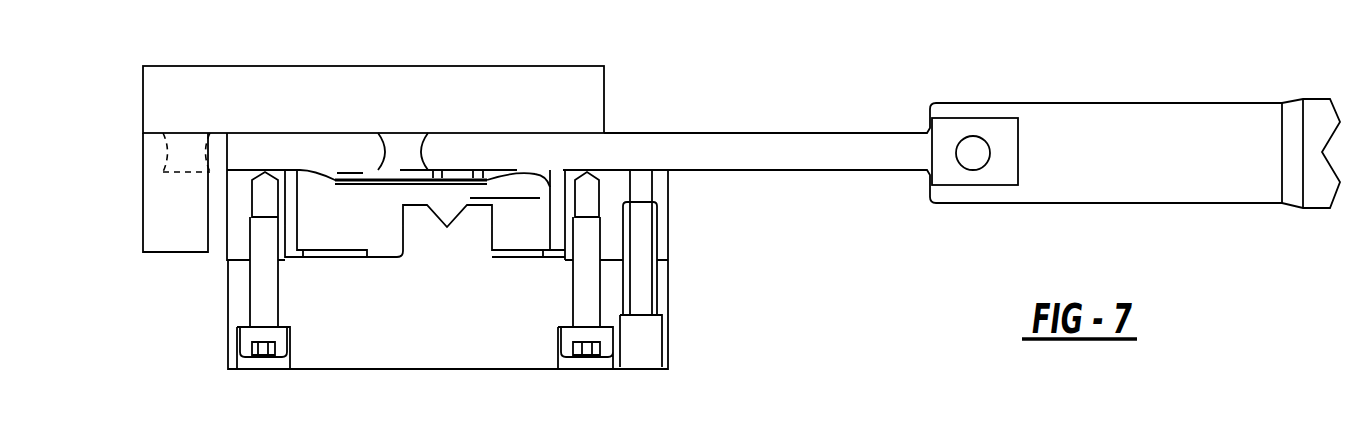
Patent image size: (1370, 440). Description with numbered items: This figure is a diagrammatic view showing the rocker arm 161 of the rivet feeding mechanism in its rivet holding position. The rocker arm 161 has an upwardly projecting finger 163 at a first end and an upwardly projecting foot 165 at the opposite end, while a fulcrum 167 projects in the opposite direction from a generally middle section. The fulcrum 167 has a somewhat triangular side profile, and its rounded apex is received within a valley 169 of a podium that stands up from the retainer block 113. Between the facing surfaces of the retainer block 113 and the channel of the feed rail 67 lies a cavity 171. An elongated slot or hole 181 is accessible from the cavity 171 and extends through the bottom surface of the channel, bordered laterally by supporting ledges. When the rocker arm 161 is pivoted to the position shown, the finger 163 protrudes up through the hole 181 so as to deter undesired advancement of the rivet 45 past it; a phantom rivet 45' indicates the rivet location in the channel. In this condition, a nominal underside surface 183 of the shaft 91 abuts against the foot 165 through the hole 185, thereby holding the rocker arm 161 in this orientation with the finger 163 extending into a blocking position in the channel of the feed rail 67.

The feed rail 67 is at (263, 147).
The pin (phantom position) 45' is at (180, 222).
The rocker arm 161 is at (377, 190).
The finger 163 is at (311, 177).
The elongated slot or hole 181 is at (330, 158).
The fulcrum 167 is at (518, 176).
The rivet 45 is at (465, 115).
The underside surface 183 is at (527, 160).
The hole 185 is at (547, 182).
The foot 165 is at (557, 170).
The shaft 91 is at (740, 150).
The retainer block 113 is at (505, 343).
The cavity 171 is at (353, 225).
The valley 169 is at (450, 228).